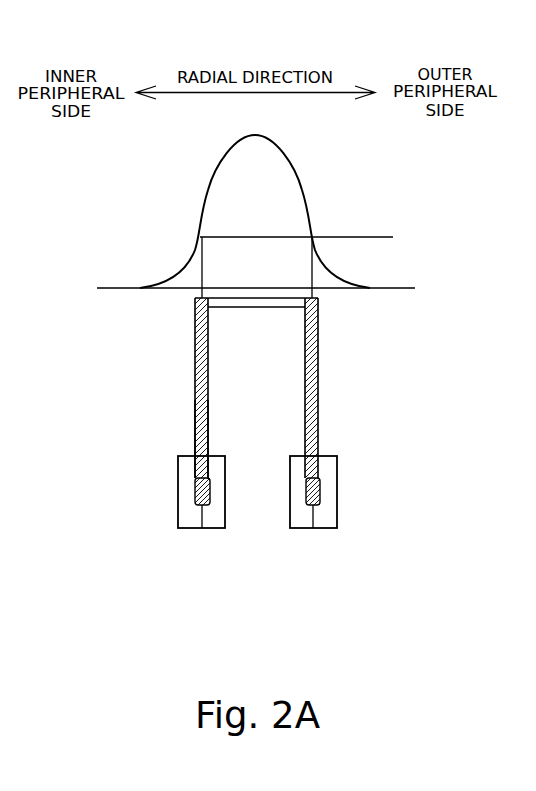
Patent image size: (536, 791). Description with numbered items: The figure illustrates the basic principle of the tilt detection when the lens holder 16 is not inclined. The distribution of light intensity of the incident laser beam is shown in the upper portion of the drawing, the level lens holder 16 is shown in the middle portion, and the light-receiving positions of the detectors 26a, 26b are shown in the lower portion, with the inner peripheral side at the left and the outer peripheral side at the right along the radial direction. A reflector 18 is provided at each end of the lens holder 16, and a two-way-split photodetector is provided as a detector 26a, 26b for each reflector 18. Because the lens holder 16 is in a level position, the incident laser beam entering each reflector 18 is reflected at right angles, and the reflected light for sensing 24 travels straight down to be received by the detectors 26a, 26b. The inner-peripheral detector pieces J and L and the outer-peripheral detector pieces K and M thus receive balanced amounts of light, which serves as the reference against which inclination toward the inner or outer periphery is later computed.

The lens holder 16 is at (268, 307).
The reflector 18 is at (195, 302).
The reflected light for sensing 24 is at (195, 420).
The detector 26a is at (205, 558).
The detector 26b is at (311, 558).